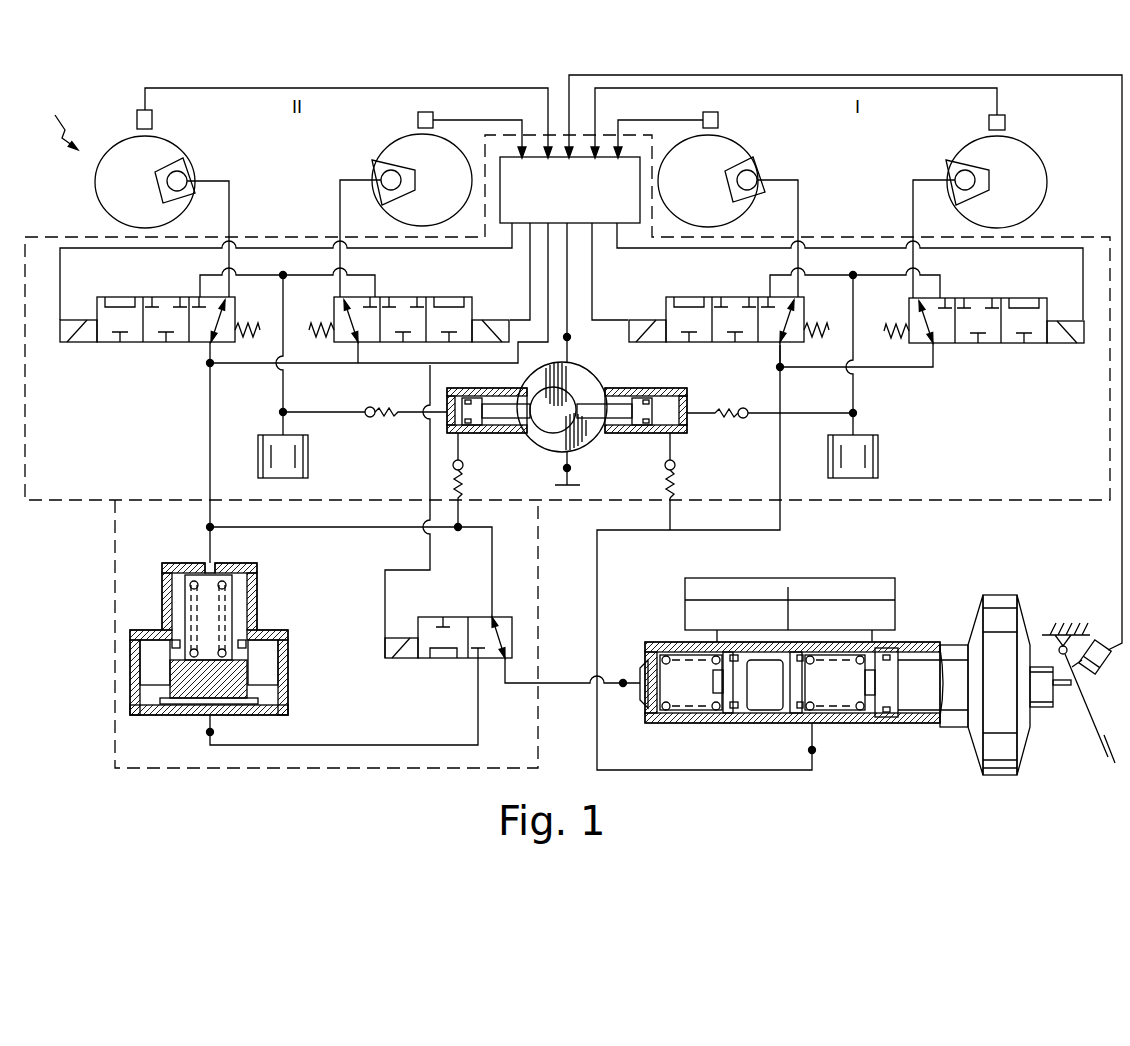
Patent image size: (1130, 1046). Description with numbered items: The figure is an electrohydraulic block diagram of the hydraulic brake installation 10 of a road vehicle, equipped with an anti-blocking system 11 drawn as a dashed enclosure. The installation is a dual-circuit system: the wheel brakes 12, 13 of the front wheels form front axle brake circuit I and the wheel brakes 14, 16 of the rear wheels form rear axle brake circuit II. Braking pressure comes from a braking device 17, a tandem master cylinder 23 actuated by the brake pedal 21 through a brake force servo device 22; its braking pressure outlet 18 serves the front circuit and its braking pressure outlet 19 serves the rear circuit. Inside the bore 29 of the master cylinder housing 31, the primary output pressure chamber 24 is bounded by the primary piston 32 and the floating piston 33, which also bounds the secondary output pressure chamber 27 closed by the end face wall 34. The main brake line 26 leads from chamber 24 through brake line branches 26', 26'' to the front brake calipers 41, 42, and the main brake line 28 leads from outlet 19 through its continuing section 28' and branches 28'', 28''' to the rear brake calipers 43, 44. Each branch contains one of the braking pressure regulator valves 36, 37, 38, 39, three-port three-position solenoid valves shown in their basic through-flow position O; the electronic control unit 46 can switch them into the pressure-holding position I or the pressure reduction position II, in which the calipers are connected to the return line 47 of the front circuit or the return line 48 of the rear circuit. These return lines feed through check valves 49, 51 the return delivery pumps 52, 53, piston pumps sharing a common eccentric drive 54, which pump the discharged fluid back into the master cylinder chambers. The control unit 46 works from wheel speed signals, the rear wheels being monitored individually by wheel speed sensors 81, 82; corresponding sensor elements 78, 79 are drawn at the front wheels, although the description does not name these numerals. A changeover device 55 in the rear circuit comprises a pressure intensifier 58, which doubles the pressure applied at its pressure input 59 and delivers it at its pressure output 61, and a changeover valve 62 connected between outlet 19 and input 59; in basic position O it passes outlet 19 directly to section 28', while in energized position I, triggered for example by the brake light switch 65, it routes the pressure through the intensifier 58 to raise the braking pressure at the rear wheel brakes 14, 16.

The hydraulic brake installation 10 is at (58, 121).
The anti-blocking system 11 is at (78, 492).
The left-hand front wheel brake 12 is at (735, 157).
The right-hand front wheel brake 13 is at (980, 152).
The left-hand rear wheel brake 14 is at (167, 157).
The right-hand rear wheel brake 16 is at (402, 152).
The braking device 17 is at (960, 641).
The braking pressure outlet 18 is at (815, 752).
The braking pressure outlet 19 is at (623, 678).
The brake pedal 21 is at (1082, 725).
The brake force servo device 22 is at (1008, 618).
The tandem master cylinder 23 is at (791, 724).
The primary output pressure chamber 24 is at (848, 690).
The main brake line 26 is at (709, 556).
The brake line branch 26' is at (804, 356).
The brake line branch 26'' is at (856, 356).
The secondary output pressure chamber 27 is at (686, 724).
The main brake line 28 is at (572, 693).
The main brake line section 28' is at (385, 511).
The brake line branch 28'' is at (193, 452).
The brake line branch 28''' is at (379, 315).
The bore 29 is at (712, 724).
The master cylinder housing 31 is at (898, 655).
The primary piston 32 is at (890, 699).
The floating piston 33 is at (733, 682).
The end face wall 34 is at (650, 707).
The braking pressure regulator valve 36 is at (750, 342).
The braking pressure regulator valve 37 is at (987, 343).
The braking pressure regulator valve 38 is at (178, 342).
The braking pressure regulator valve 39 is at (412, 342).
The brake caliper 41 is at (755, 187).
The brake caliper 42 is at (960, 188).
The brake caliper 43 is at (183, 188).
The brake caliper 44 is at (384, 186).
The electronic control unit 46 is at (527, 212).
The return line 47 is at (877, 278).
The return line 48 is at (308, 277).
The check valve 49 is at (748, 420).
The check valve 51 is at (372, 418).
The return delivery pump 52 is at (640, 435).
The return delivery pump 53 is at (500, 435).
The eccentric drive 54 is at (577, 390).
The changeover device 55 is at (515, 545).
The pressure intensifier 58 is at (160, 600).
The pressure input 59 is at (207, 735).
The pressure output 61 is at (207, 530).
The changeover valve 62 is at (458, 630).
The brake light switch 65 is at (1103, 666).
The wheel speed sensor 78 is at (718, 120).
The wheel speed sensor 79 is at (989, 122).
The wheel speed sensor 81 is at (152, 120).
The wheel speed sensor 82 is at (418, 118).